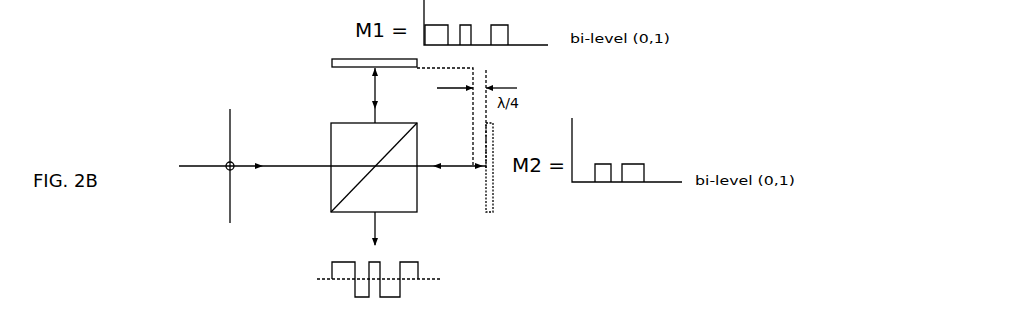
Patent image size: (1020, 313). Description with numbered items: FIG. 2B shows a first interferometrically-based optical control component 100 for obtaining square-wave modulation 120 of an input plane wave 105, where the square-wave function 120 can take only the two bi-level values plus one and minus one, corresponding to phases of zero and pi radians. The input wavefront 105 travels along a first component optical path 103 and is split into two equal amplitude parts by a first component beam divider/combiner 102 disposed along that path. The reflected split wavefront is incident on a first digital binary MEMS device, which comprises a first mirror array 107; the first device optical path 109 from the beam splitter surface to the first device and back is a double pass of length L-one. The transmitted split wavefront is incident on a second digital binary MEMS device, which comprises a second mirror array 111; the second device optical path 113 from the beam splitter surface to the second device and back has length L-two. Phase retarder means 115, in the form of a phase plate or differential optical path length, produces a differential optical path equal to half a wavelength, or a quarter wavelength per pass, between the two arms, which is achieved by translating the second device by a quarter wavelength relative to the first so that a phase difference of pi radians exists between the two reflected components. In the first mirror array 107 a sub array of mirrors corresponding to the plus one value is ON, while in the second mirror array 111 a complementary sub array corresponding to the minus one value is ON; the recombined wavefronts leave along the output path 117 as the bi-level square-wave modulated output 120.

The first interferometrically-based optical control component 100 is at (762, 42).
The first component beam divider/combiner 102 is at (374, 167).
The first component optical path 103 is at (255, 177).
The input wavefront 105 is at (243, 166).
The mirror array 107 is at (352, 58).
The M1 optical path 109 is at (356, 95).
The mirror array 111 is at (504, 174).
The M2 optical path 113 is at (451, 177).
The phase retarder means 115 is at (493, 73).
The output beam path 117 is at (363, 224).
The square-wave function 120 is at (442, 262).